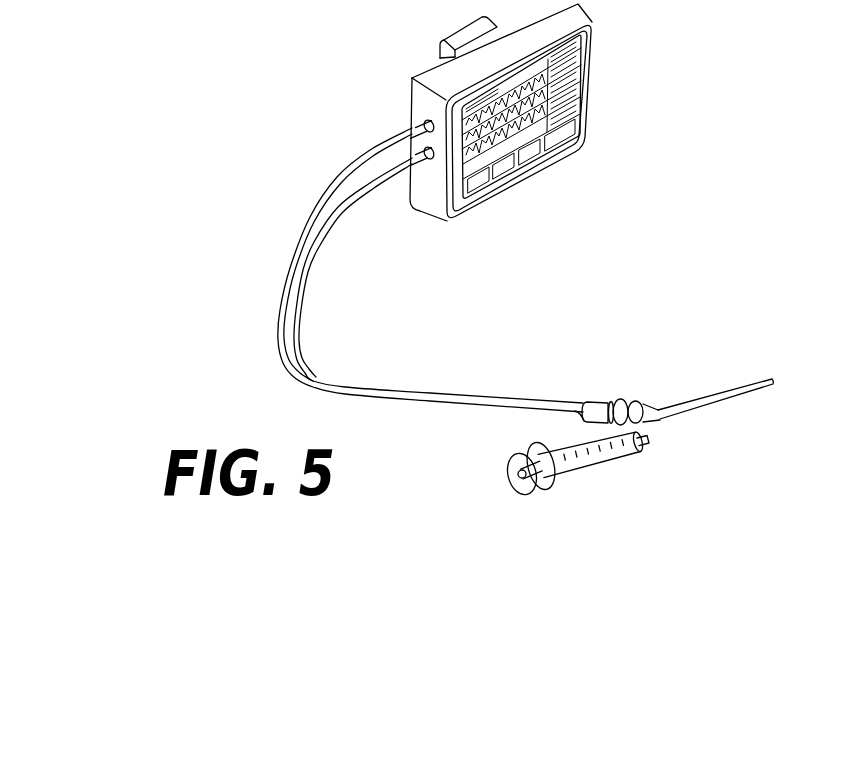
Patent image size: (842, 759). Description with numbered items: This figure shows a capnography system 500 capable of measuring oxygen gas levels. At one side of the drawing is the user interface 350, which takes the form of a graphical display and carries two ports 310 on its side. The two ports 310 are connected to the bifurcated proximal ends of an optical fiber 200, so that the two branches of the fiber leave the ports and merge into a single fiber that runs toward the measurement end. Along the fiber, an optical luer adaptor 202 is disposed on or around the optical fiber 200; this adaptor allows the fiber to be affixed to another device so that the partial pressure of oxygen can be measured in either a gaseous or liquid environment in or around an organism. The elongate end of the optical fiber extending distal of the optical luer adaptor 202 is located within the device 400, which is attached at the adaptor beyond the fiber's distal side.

The capnography system 500 is at (112, 71).
The user interface 350 is at (595, 49).
The ports 310 is at (414, 127).
The optical fiber 200 is at (458, 393).
The optical luer adaptor 202 is at (598, 401).
The device 400 is at (747, 388).